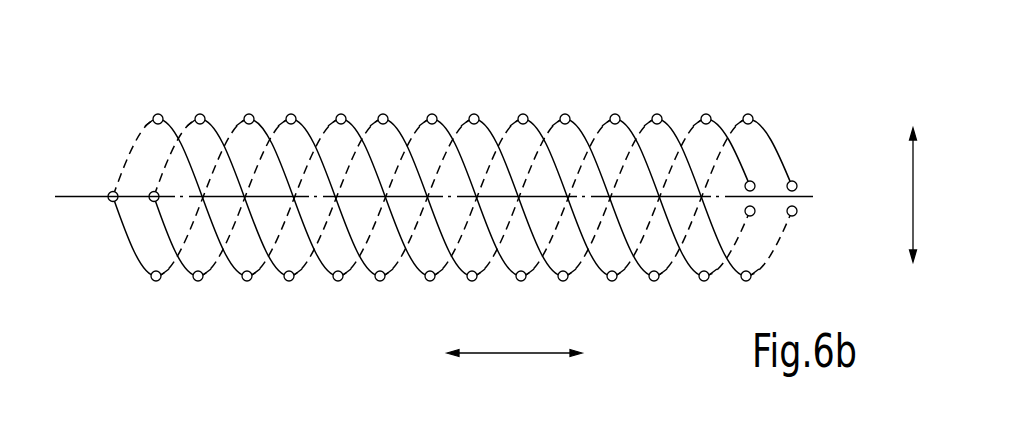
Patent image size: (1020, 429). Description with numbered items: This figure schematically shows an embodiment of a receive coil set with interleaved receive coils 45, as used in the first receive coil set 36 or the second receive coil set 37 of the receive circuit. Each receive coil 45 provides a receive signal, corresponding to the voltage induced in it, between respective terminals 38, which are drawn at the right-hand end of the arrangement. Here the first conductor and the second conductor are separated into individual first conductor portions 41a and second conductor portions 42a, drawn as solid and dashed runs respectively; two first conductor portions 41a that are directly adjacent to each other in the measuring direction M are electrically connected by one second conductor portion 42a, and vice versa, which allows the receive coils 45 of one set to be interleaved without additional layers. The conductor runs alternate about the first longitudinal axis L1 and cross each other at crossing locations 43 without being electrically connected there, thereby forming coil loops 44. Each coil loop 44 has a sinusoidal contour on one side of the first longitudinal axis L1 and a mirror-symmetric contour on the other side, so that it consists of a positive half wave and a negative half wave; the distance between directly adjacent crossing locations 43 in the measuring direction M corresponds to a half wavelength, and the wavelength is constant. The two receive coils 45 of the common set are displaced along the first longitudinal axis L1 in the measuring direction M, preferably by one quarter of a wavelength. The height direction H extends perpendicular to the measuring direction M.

The first receive coil set 36 is at (509, 182).
The second receive coil set 37 is at (491, 182).
The terminals 38 is at (755, 183).
The first conductor portions 41a is at (362, 128).
The second conductor portions 42a is at (183, 117).
The crossing locations 43 is at (386, 197).
The coil loops 44 is at (146, 228).
The receive coils 45 is at (718, 112).
The first longitudinal axis L1 is at (63, 198).
The height direction H is at (915, 197).
The measuring direction M is at (508, 355).